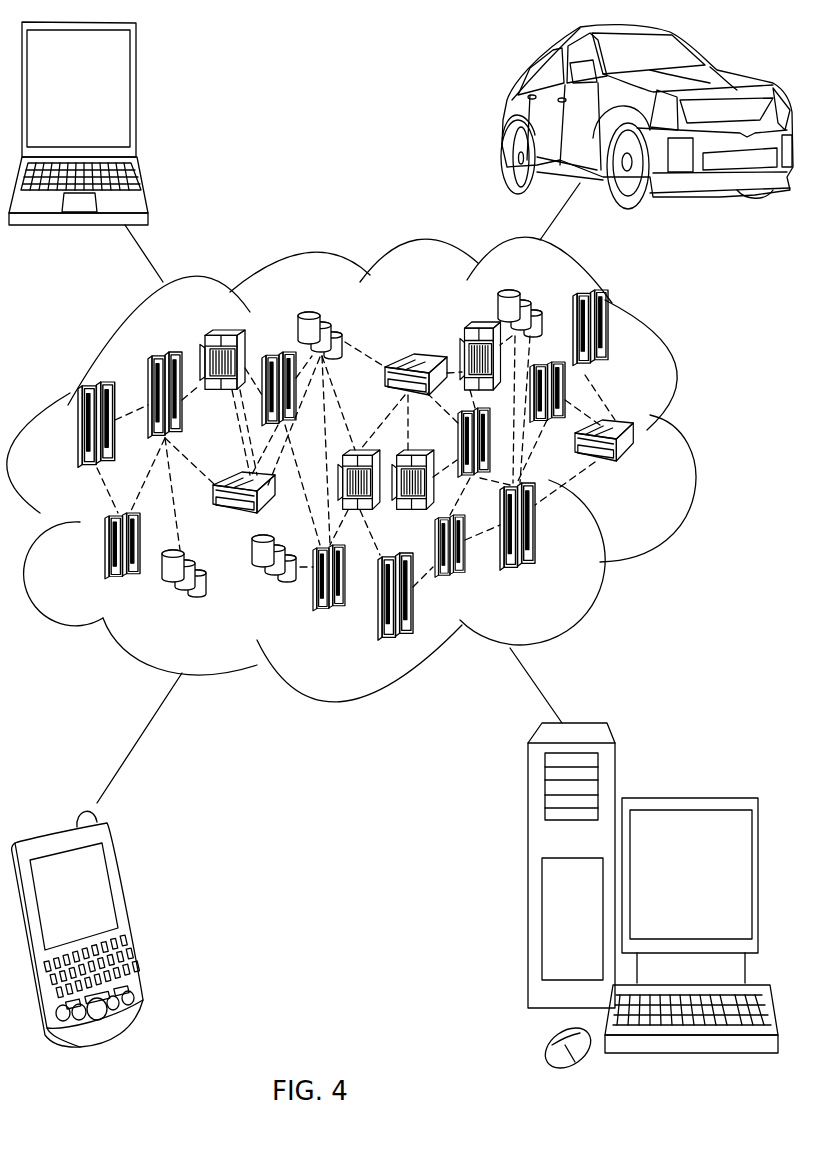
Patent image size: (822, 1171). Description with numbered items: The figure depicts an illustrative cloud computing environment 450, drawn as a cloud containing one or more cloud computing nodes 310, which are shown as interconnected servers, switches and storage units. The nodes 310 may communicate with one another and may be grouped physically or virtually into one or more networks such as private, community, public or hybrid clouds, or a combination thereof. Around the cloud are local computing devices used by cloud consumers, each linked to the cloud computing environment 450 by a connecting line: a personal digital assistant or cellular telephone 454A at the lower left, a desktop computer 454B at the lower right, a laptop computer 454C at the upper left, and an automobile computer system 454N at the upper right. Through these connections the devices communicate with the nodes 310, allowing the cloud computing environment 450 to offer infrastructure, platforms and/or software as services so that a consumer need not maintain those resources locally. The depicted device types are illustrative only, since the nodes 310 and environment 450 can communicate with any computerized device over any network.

The laptop computer 454C is at (137, 98).
The automobile computer system 454N is at (503, 117).
The cloud computing environment 450 is at (688, 437).
The cloud computing nodes 310 is at (641, 477).
The personal digital assistant (PDA) or cellular telephone 454A is at (127, 913).
The desktop computer 454B is at (688, 797).